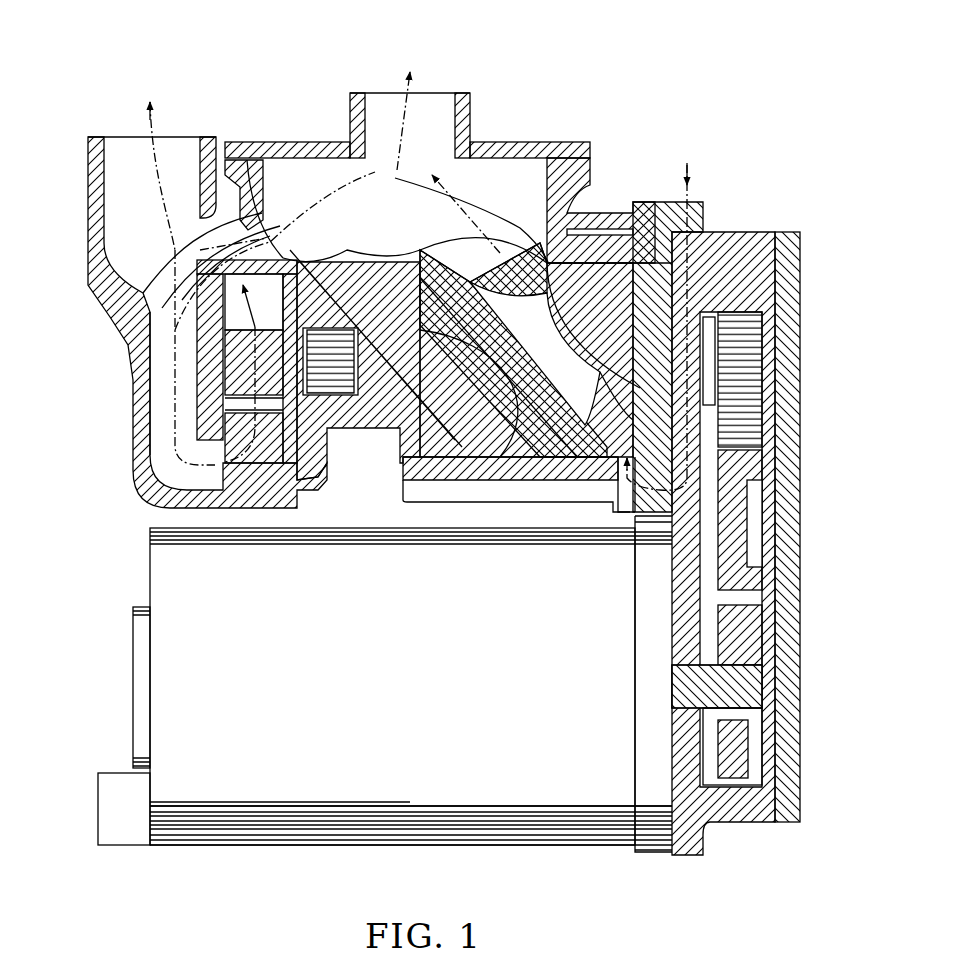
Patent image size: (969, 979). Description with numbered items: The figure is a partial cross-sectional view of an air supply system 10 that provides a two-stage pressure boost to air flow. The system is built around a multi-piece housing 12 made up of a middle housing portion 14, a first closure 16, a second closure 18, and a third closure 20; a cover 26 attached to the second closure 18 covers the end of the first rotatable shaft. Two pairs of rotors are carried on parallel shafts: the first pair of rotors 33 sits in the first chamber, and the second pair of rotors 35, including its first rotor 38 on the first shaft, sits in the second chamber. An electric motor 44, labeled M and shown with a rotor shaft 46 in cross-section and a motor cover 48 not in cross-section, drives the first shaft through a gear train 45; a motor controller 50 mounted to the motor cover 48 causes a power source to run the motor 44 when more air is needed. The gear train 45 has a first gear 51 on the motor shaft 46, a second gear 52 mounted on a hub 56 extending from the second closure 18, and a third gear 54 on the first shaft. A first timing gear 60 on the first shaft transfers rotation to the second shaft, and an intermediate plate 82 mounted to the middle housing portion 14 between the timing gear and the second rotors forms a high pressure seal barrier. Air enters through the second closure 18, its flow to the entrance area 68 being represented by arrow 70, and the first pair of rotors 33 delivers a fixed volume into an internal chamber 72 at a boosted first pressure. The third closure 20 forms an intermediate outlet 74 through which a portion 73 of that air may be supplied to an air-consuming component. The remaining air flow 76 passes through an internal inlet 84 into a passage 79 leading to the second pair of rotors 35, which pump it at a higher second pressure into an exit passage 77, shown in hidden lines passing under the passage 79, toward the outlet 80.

The air supply system 10 is at (663, 52).
The multi-piece housing 12 is at (648, 160).
The middle housing portion 14 is at (593, 217).
The first closure 16 is at (130, 400).
The second closure 18 is at (748, 232).
The third closure 20 is at (527, 142).
The cover 26 is at (800, 505).
The first pair of rotors 33 is at (458, 437).
The second pair of rotors 35 is at (272, 455).
The first rotor 38 is at (230, 465).
The electric motor 44 is at (590, 845).
The gear train 45 is at (760, 740).
The rotor shaft 46 is at (728, 690).
The motor cover 48 is at (197, 845).
The motor controller 50 is at (98, 807).
The first gear 51 is at (745, 633).
The second gear 52 is at (748, 583).
The third gear 54 is at (745, 410).
The hub 56 is at (755, 510).
The first timing gear 60 is at (330, 360).
The entrance area 68 is at (602, 450).
The arrow 70 is at (712, 215).
The internal chamber 72 is at (400, 205).
The portion of the air flow 73 is at (405, 110).
The intermediate outlet 74 is at (390, 123).
The air flow 76 is at (325, 203).
The exit passage 77 is at (130, 210).
The passage 79 is at (163, 440).
The outlet 80 is at (128, 137).
The intermediate plate 82 is at (318, 482).
The internal inlet 84 is at (245, 180).